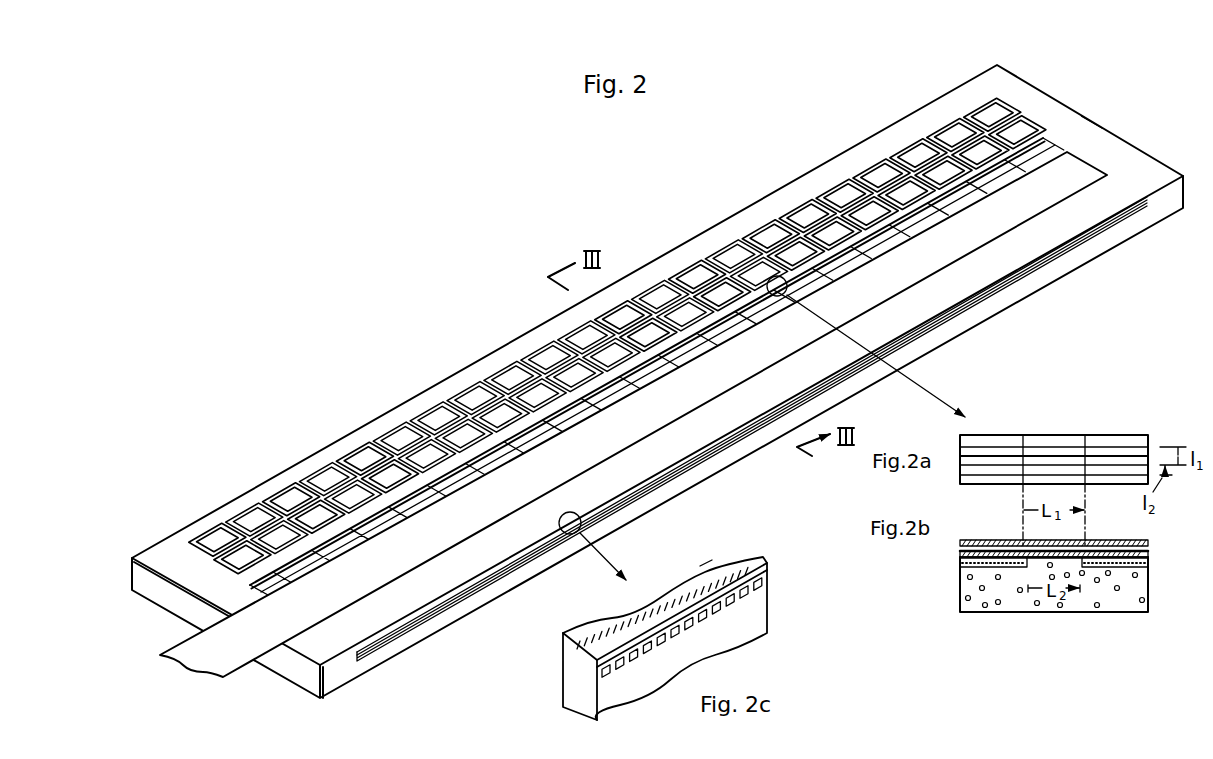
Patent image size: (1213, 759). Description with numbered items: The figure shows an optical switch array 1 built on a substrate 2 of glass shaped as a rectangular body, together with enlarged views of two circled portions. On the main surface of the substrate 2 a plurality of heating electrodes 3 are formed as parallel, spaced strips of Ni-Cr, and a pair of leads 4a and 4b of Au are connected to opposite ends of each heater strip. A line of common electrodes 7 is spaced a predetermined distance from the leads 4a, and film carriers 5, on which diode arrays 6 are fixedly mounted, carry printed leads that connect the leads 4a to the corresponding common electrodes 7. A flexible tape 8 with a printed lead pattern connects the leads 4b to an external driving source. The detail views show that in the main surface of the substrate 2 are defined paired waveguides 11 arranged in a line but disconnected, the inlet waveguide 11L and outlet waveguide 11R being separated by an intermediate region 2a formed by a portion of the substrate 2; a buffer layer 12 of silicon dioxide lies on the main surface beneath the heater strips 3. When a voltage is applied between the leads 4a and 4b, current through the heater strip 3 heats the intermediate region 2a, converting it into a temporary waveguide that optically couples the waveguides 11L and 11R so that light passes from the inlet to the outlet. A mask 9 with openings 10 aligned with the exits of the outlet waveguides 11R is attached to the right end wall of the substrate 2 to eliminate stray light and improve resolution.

In FIG. 2, the optical switch array 1 is at (1119, 132).
In FIG. 2, the substrate 2 is at (731, 229).
In FIG. 2A, the substrate 2 is at (1073, 448).
In FIG. 2B, the substrate 2 is at (1140, 598).
In FIG. 2C, the substrate 2 is at (577, 673).
In FIG. 2B, the intermediate region 2a is at (1038, 567).
In FIG. 2, the heating electrodes 3 is at (1040, 136).
In FIG. 2A, the heating electrodes 3 is at (1044, 458).
In FIG. 2B, the heating electrodes 3 is at (1073, 549).
In FIG. 2, the lead 4a is at (1023, 126).
In FIG. 2A, the lead 4a is at (997, 460).
In FIG. 2B, the lead 4a is at (978, 543).
In FIG. 2, the lead 4b is at (1049, 147).
In FIG. 2A, the lead 4b is at (1118, 460).
In FIG. 2B, the lead 4b is at (1148, 543).
In FIG. 2, the film carriers 5 is at (892, 200).
In FIG. 2, the diode arrays 6 is at (846, 212).
In FIG. 2, the common electrodes 7 is at (791, 222).
In FIG. 2, the flexible tape 8 is at (440, 522).
In FIG. 2, the mask 9 is at (441, 605).
In FIG. 2C, the mask 9 is at (752, 616).
In FIG. 2, the openings 10 is at (421, 621).
In FIG. 2C, the openings 10 is at (762, 576).
In FIG. 2C, the waveguides 11 is at (706, 562).
In FIG. 2B, the inlet waveguide 11L is at (960, 566).
In FIG. 2B, the outlet waveguide 11R is at (1148, 562).
In FIG. 2B, the buffer layer 12 is at (960, 554).